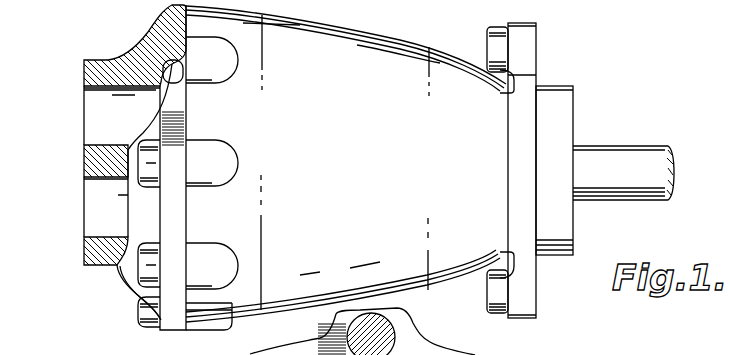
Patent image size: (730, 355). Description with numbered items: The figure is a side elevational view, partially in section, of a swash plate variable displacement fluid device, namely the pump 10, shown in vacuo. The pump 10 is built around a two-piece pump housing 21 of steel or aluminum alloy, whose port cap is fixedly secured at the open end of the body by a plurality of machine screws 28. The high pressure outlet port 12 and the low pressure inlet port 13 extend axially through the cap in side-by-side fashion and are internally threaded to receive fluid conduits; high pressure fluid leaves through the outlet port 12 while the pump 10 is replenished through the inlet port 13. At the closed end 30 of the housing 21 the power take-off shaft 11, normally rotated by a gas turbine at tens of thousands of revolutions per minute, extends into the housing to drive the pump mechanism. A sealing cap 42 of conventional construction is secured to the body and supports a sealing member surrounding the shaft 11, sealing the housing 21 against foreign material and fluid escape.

The pump 10 is at (108, 40).
The power take-off shaft 11 is at (630, 148).
The high pressure outlet port 12 is at (93, 212).
The low pressure inlet port 13 is at (93, 115).
The pump housing 21 is at (398, 60).
The machine screws 28 is at (138, 317).
The closed end 30 is at (530, 73).
The sealing cap 42 is at (568, 108).